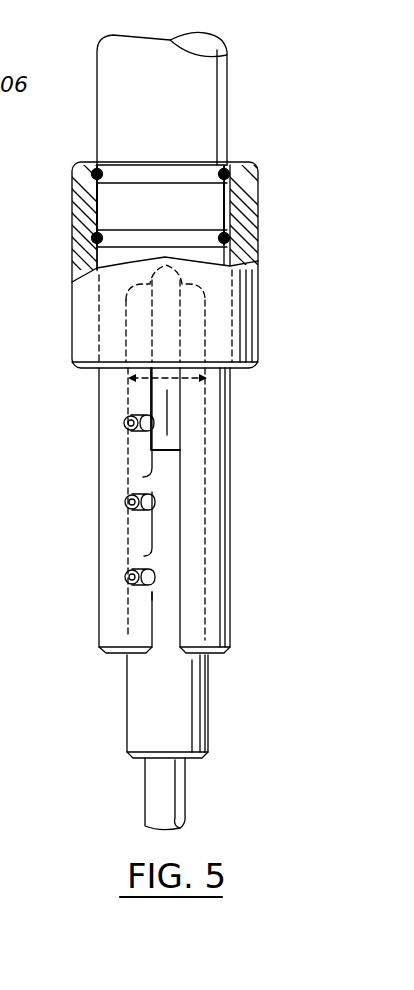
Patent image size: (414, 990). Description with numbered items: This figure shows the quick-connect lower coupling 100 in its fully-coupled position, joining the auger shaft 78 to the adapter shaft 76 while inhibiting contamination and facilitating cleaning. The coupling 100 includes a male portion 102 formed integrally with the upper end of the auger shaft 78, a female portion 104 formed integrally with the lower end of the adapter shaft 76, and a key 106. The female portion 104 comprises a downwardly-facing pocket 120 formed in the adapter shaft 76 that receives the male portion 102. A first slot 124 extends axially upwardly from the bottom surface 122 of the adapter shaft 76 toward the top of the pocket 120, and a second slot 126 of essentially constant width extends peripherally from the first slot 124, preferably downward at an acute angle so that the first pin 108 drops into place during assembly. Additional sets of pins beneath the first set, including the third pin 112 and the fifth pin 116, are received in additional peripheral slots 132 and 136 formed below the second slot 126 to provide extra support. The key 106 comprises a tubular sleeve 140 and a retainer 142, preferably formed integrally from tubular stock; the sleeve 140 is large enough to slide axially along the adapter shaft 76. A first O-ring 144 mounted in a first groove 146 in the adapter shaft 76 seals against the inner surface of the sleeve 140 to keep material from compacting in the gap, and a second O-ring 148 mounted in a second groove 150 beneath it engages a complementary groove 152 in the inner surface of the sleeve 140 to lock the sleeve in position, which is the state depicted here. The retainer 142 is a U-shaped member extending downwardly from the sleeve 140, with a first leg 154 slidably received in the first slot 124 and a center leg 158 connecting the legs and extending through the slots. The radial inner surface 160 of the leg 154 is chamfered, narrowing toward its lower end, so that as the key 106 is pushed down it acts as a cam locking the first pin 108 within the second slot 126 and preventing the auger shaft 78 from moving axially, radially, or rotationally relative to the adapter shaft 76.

The adapter shaft 76 is at (225, 68).
The auger shaft 78 is at (178, 812).
The lower coupling 100 is at (84, 389).
The male portion 102 is at (216, 715).
The female portion 104 is at (238, 632).
The key 106 is at (80, 156).
The first pin 108 is at (129, 425).
The third pin 112 is at (128, 503).
The fifth pin 116 is at (128, 577).
The pocket 120 is at (132, 319).
The bottom surface 122 is at (122, 655).
The first slot 124 is at (174, 549).
The second slot 126 is at (148, 405).
The additional peripheral slot 132 is at (146, 496).
The additional peripheral slot 136 is at (142, 560).
The tubular sleeve 140 is at (72, 352).
The retainer 142 is at (170, 403).
The first O-ring 144 is at (92, 175).
The first groove 146 is at (212, 166).
The second O-ring 148 is at (92, 238).
The second groove 150 is at (120, 240).
The complementary groove 152 is at (93, 234).
The first leg 154 is at (173, 432).
The center leg 158 is at (160, 347).
The radial inner surface 160 is at (150, 443).